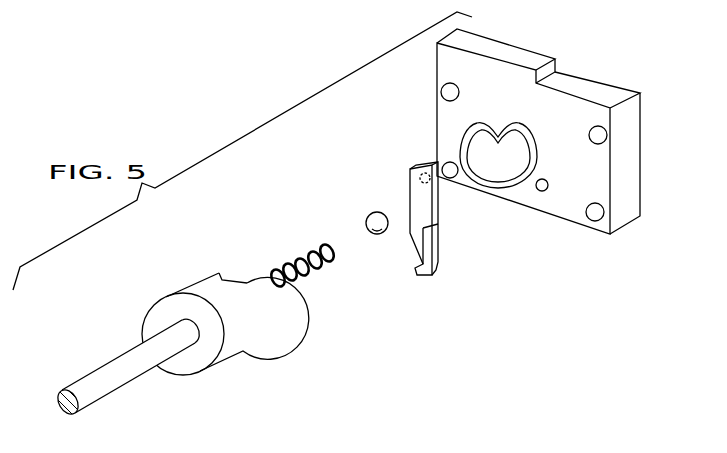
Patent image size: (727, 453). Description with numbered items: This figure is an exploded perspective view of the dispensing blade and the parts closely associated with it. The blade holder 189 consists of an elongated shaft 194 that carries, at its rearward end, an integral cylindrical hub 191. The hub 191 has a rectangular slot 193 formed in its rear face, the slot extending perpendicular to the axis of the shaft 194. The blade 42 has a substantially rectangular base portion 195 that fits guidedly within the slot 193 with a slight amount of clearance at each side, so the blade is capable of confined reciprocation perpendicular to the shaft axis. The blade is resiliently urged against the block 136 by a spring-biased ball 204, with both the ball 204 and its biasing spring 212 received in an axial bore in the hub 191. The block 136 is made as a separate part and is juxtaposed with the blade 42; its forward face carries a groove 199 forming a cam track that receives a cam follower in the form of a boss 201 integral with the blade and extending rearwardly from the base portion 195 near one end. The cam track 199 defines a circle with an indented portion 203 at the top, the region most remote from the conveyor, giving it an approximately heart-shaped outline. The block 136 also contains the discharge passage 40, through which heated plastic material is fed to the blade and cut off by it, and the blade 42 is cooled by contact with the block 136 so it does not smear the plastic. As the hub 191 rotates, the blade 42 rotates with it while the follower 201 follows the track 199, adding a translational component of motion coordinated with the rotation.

The block 136 is at (570, 131).
The groove 199 is at (533, 141).
The indented portion 203 is at (500, 134).
The discharge passage 40 is at (548, 183).
The blade 42 is at (396, 197).
The base portion 195 is at (396, 197).
The boss 201 is at (418, 188).
The ball 204 is at (380, 234).
The biasing spring 212 is at (308, 273).
The blade holder 189 is at (186, 331).
The cylindrical hub 191 is at (232, 302).
The rectangular slot 193 is at (237, 275).
The shaft 194 is at (98, 375).